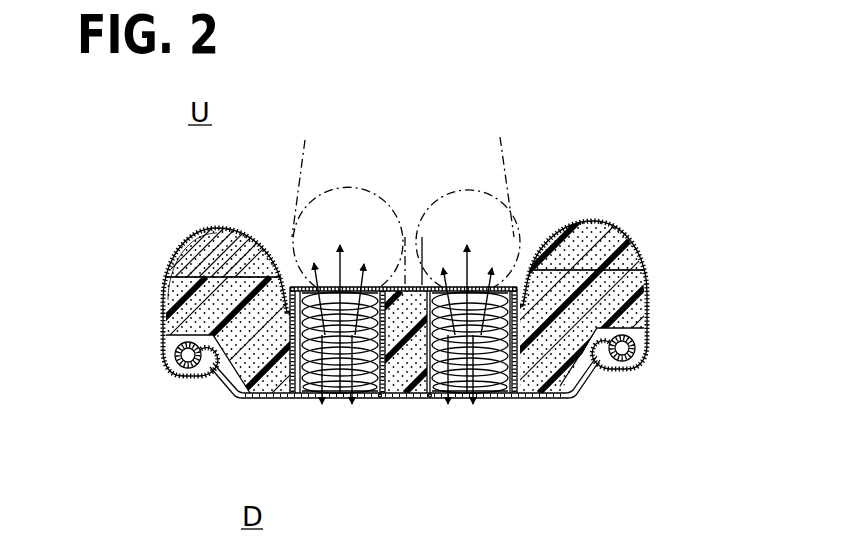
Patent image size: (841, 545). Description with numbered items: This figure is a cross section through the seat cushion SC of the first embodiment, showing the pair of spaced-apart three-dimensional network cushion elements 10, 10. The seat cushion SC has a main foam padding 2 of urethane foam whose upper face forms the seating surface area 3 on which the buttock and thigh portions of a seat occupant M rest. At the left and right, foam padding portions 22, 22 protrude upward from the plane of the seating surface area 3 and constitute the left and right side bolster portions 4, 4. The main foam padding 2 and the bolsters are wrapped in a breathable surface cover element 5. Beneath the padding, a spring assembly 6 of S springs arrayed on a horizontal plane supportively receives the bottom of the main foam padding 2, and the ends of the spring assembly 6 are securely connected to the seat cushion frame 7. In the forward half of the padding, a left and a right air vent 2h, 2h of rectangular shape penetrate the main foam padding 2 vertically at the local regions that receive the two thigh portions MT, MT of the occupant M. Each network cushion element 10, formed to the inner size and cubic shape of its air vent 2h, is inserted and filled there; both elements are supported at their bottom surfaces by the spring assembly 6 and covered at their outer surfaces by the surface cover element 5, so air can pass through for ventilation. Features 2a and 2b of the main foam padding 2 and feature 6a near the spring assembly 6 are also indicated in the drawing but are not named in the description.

The main foam padding 2 is at (618, 291).
The top plate of base 2a is at (422, 285).
The partition block 2b is at (427, 382).
The air vent 2h is at (380, 397).
The seating surface area 3 is at (406, 285).
The side bolster portion 4 is at (206, 228).
The surface cover element 5 is at (220, 229).
The spring assembly 6 is at (363, 383).
The roll pin 6a is at (197, 377).
The seat cushion frame 7 is at (170, 362).
The three-dimensional air-permeable network cushion element 10 is at (327, 382).
The foam padding portion 22 is at (196, 246).
The seat occupant M is at (513, 166).
The thigh portion MT is at (351, 187).
The seat cushion SC is at (656, 158).